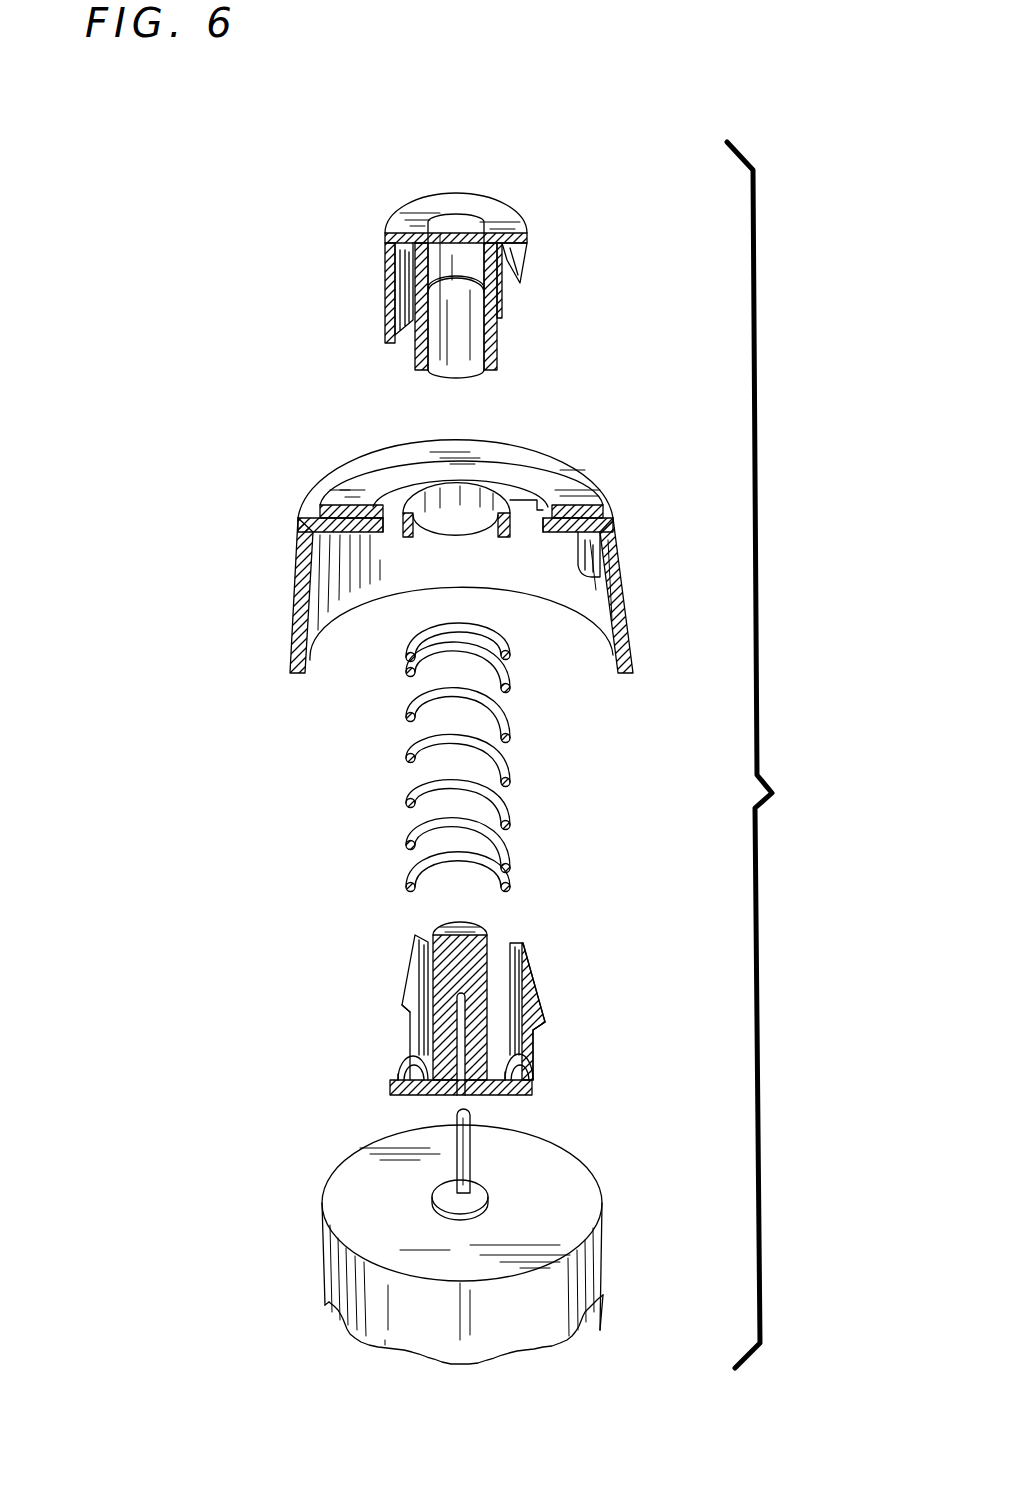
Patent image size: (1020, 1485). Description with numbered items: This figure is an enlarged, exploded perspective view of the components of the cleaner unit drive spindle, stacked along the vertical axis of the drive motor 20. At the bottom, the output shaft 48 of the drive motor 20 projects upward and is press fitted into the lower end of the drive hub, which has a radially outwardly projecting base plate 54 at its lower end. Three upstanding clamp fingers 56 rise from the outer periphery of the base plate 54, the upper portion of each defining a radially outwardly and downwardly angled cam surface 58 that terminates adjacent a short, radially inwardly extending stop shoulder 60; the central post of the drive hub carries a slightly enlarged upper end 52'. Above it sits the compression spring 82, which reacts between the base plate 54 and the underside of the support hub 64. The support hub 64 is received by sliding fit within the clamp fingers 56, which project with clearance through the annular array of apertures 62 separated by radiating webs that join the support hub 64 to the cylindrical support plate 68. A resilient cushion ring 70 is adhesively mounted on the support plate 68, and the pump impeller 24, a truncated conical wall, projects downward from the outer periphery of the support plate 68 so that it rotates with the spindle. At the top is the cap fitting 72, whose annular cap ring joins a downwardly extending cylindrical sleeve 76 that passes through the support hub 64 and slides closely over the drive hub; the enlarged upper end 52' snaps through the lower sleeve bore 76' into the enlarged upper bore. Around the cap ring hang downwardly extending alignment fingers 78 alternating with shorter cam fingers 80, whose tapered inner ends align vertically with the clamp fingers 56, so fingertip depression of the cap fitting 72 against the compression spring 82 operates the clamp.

The drive motor 20 is at (420, 1236).
The pump impeller 24 is at (450, 552).
The output shaft 48 is at (475, 1150).
The enlarged upper end 52' is at (478, 1025).
The base plate 54 is at (500, 1097).
The clamp fingers 56 is at (400, 1065).
The cam surface 58 is at (405, 970).
The stop shoulder 60 is at (403, 1012).
The apertures 62 is at (580, 495).
The support hub 64 is at (461, 508).
The support plate 68 is at (580, 585).
The resilient cushion ring 70 is at (365, 478).
The cap fitting 72 is at (455, 283).
The cylindrical sleeve 76 is at (508, 283).
The lower sleeve bore 76' is at (471, 396).
The alignment fingers 78 is at (387, 283).
The cam fingers 80 is at (527, 255).
The compression spring 82 is at (512, 815).